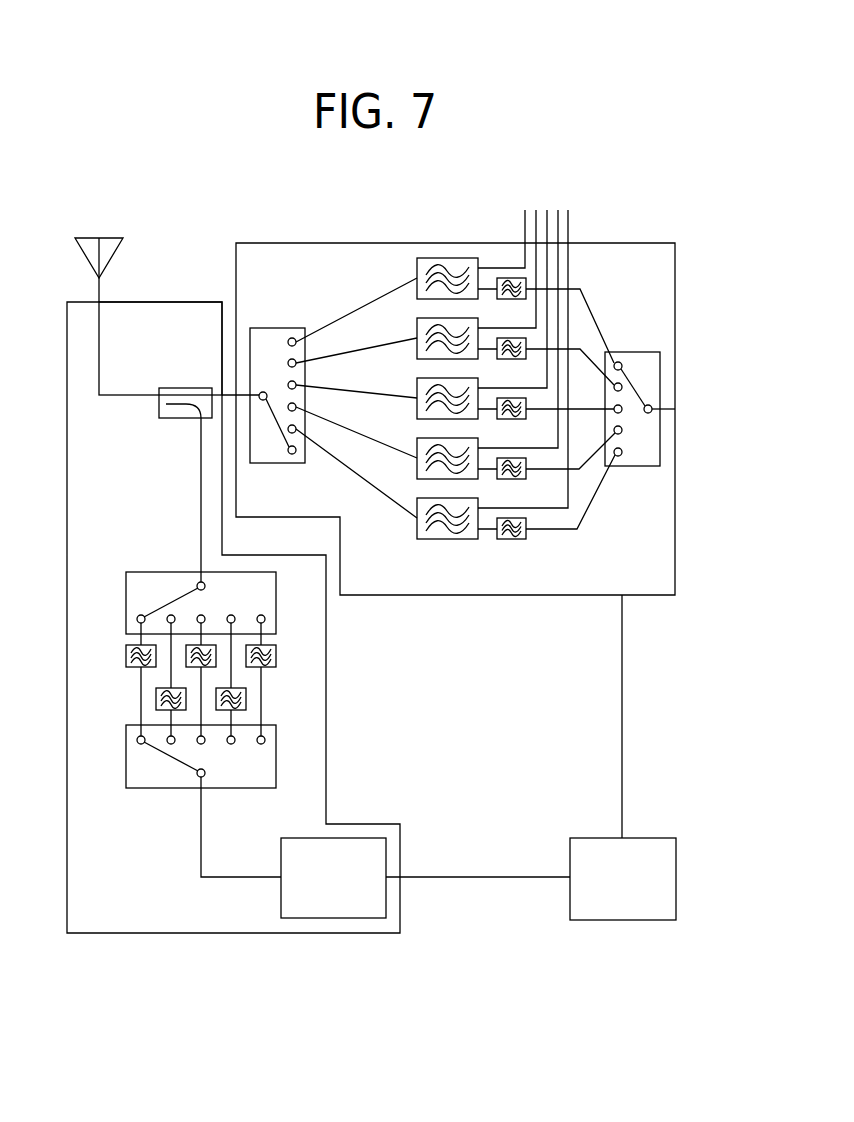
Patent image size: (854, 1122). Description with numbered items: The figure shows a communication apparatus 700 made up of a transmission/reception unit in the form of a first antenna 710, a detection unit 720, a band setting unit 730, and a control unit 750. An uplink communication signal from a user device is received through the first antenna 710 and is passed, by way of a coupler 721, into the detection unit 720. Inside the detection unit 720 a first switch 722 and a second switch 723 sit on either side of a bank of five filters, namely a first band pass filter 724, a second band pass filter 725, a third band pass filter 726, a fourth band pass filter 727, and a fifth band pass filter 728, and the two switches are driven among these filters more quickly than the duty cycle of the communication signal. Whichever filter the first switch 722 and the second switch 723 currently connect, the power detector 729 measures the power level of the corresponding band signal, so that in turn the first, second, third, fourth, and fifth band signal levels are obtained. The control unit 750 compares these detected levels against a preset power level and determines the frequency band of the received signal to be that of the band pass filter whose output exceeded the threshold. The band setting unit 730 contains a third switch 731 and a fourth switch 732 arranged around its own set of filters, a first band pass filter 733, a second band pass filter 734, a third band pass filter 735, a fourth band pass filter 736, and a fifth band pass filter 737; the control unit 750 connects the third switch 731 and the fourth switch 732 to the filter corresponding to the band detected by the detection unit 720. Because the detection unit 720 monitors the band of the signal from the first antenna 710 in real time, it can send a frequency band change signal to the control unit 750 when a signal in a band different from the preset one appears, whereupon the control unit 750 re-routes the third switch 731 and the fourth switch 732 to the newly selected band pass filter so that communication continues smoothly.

The communication apparatus 700 is at (583, 96).
The first antenna 710 is at (114, 260).
The detection unit 720 is at (178, 302).
The coupler 721 is at (178, 418).
The first switch 722 is at (170, 595).
The second switch 723 is at (173, 757).
The first band pass filter 724 is at (126, 651).
The second band pass filter 725 is at (156, 697).
The third band pass filter 726 is at (209, 643).
The fourth band pass filter 727 is at (246, 697).
The fifth band pass filter 728 is at (267, 643).
The power detector 729 is at (337, 918).
The band setting unit 730 is at (365, 243).
The third switch 731 is at (270, 407).
The fourth switch 732 is at (636, 372).
The first band pass filter 733 is at (516, 278).
The second band pass filter 734 is at (497, 345).
The third band pass filter 735 is at (527, 413).
The fourth band pass filter 736 is at (527, 473).
The fifth band pass filter 737 is at (528, 537).
The control unit 750 is at (622, 920).